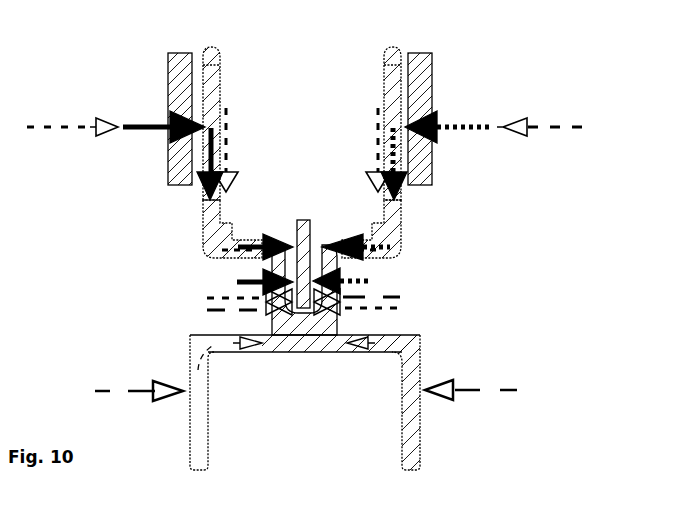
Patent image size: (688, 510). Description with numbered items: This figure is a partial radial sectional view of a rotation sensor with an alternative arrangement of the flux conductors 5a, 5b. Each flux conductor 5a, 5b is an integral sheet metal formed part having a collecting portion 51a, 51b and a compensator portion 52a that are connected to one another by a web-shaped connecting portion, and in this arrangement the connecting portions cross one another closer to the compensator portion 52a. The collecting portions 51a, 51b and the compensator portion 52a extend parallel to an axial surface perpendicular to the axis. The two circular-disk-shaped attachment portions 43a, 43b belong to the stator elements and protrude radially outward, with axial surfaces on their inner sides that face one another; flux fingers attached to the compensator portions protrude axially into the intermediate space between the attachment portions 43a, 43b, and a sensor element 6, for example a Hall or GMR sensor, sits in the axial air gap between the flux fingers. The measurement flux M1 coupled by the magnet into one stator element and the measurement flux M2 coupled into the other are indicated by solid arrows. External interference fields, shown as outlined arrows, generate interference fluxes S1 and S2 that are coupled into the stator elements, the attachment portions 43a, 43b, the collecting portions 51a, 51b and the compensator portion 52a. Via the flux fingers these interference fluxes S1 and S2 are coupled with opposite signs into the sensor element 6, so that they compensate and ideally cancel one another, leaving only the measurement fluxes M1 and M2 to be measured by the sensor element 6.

The compensator portion 52a is at (38, 8).
The attachment portion 43b is at (183, 82).
The attachment portion 43a is at (420, 80).
The collecting portion 51b is at (210, 123).
The collecting portion 51a is at (397, 55).
The sensor element 6 is at (304, 220).
The flux conductor 5a is at (188, 432).
The flux conductor 5b is at (424, 458).
The measurement flux M1 is at (165, 129).
The measurement flux M2 is at (435, 138).
The interference flux S1 is at (65, 130).
The interference flux S2 is at (534, 132).